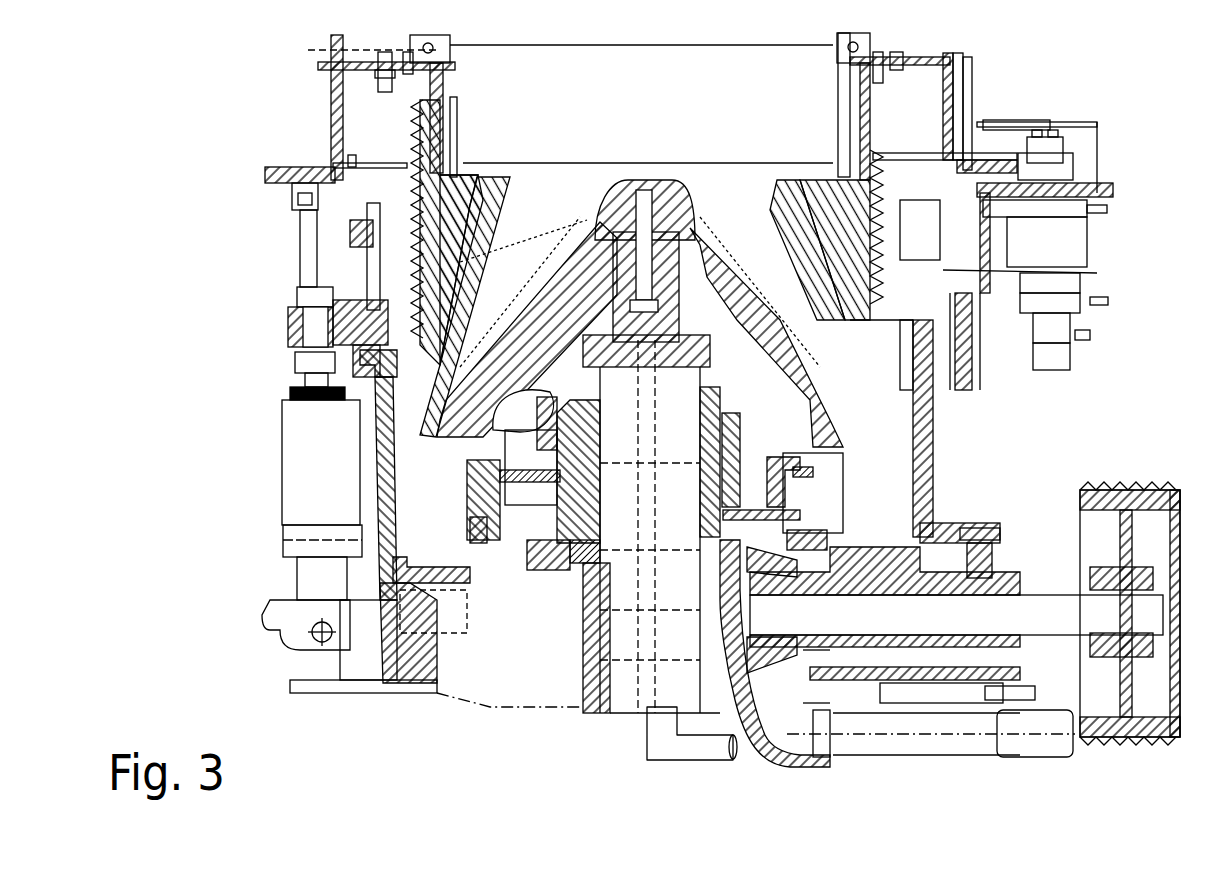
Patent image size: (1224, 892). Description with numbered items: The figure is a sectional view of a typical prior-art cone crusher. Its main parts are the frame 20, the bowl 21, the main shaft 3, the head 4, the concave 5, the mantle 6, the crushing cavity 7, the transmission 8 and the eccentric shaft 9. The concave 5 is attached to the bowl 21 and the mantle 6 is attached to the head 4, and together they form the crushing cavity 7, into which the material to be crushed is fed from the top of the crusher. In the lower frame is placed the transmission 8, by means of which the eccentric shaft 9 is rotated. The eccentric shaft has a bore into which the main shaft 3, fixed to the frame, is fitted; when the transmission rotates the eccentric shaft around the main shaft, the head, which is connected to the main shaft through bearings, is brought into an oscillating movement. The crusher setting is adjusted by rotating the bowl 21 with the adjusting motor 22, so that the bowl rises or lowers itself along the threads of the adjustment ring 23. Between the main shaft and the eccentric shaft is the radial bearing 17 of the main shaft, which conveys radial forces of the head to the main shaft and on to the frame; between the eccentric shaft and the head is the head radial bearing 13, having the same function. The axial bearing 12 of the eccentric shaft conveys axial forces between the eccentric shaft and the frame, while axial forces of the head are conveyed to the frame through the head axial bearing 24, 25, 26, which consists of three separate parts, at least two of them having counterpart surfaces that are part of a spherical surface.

The main shaft 3 is at (630, 700).
The head 4 is at (816, 430).
The concave 5 is at (493, 265).
The mantle 6 is at (440, 413).
The crushing cavity 7 is at (820, 341).
The transmission 8 is at (1003, 600).
The eccentric shaft 9 is at (583, 463).
The axial bearing of the eccentric shaft 12 is at (712, 575).
The radial bearing of the head 13 is at (553, 473).
The radial bearing of the main shaft 17 is at (607, 520).
The frame 20 is at (414, 688).
The bowl 21 is at (420, 110).
The adjusting motor 22 is at (1089, 251).
The adjustment ring 23 is at (944, 321).
The axial bearing of the head 24 is at (560, 345).
The axial bearing of the head 25 is at (600, 328).
The axial bearing of the head 26 is at (590, 305).